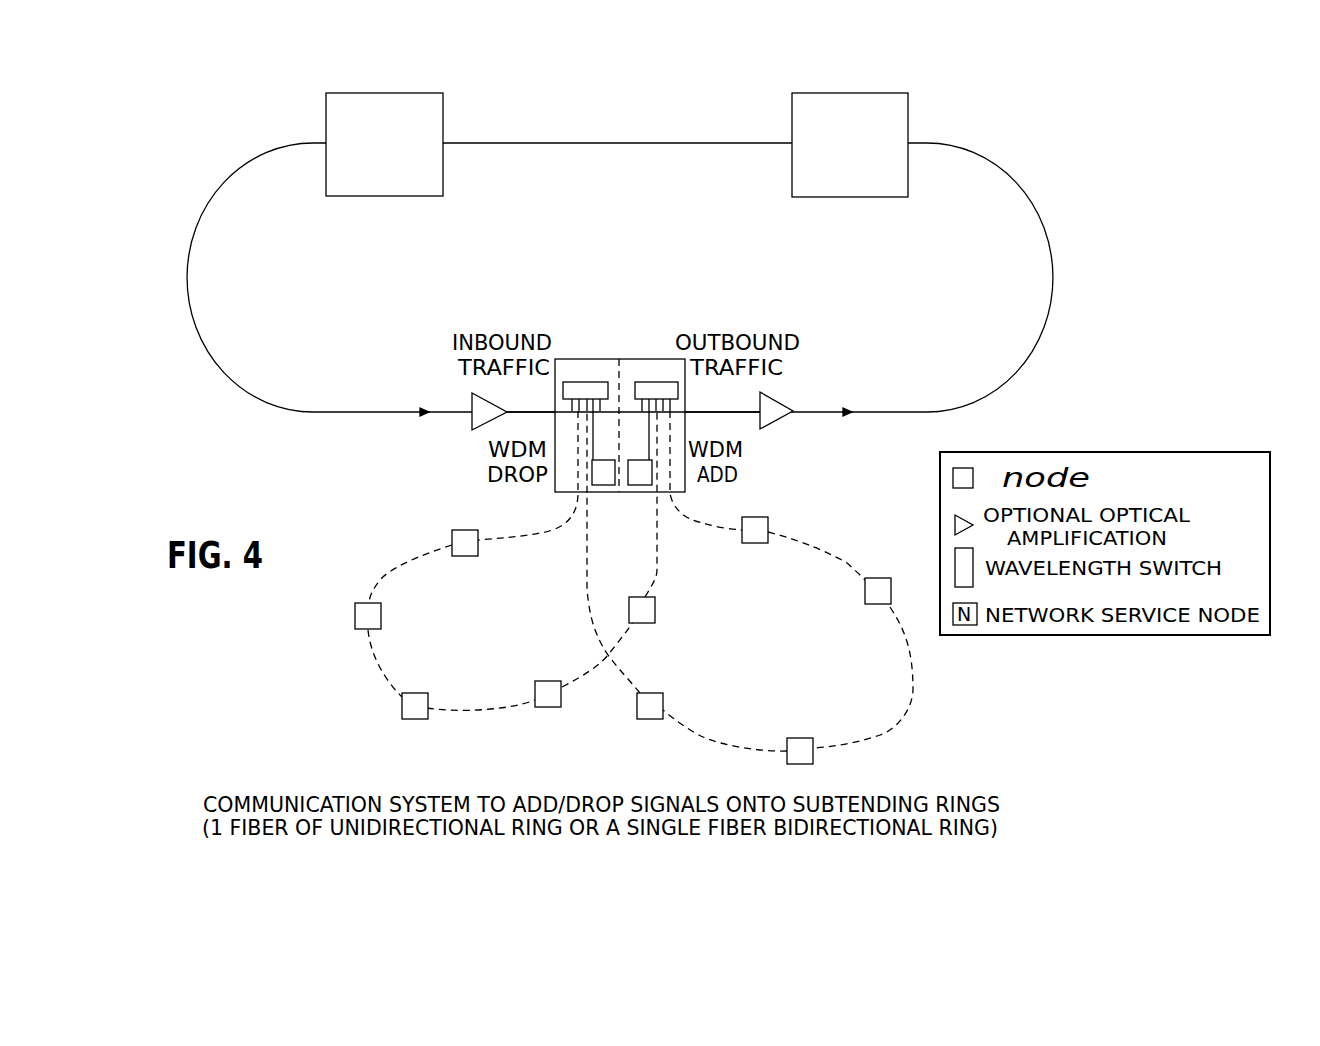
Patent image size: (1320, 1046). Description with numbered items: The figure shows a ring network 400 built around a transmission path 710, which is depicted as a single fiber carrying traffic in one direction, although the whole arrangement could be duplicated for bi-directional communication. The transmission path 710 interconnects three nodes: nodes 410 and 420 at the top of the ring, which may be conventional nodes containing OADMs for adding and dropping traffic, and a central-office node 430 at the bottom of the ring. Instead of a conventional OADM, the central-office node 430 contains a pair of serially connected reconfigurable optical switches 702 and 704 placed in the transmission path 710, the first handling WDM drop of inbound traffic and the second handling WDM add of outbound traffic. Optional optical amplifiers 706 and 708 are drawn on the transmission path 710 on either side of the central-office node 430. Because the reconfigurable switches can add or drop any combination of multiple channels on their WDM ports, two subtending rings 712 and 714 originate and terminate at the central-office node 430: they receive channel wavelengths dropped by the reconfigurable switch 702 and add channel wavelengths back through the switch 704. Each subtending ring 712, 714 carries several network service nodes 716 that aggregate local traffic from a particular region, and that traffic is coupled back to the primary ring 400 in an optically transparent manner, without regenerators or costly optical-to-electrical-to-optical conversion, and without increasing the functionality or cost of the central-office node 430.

The ring network 400 is at (622, 141).
The node 410 is at (383, 93).
The node 420 is at (850, 93).
The central-office node 430 is at (620, 432).
The reconfigurable optical switch 702 is at (593, 382).
The reconfigurable optical switch 704 is at (653, 382).
The optional optical amplifier (inbound) 706 is at (471, 423).
The optional optical amplifier (outbound) 708 is at (778, 418).
The transmission path 710 is at (528, 410).
The subtending ring 712 is at (372, 650).
The subtending ring 714 is at (715, 715).
The network node 716 is at (465, 530).